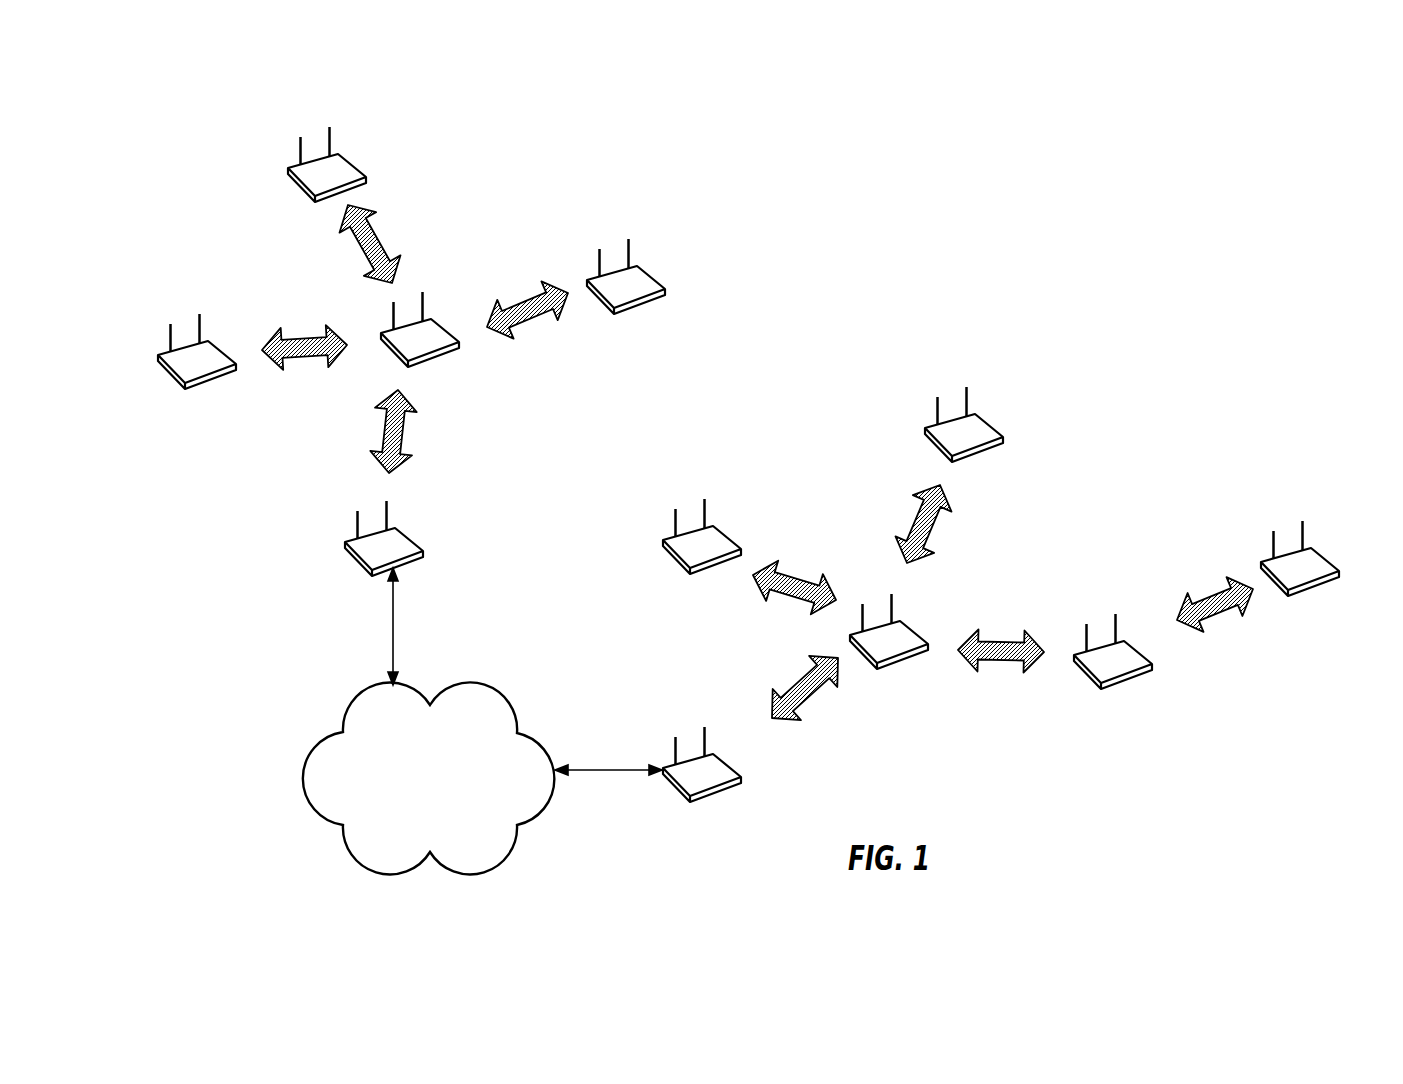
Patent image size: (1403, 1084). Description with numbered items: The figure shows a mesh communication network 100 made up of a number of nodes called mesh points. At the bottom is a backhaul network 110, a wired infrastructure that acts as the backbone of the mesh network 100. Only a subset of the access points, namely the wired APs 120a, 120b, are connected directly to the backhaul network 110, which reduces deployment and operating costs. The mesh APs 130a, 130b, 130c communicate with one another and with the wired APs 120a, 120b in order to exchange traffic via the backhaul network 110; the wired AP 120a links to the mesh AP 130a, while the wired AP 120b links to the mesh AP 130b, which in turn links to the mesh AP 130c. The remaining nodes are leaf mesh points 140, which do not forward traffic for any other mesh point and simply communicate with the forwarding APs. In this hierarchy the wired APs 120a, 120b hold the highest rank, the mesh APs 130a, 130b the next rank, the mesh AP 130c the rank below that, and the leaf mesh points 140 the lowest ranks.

The mesh communication network 100 is at (1123, 191).
The backhaul network 110 is at (470, 686).
The wired AP 120a is at (425, 521).
The wired AP 120b is at (743, 747).
The mesh AP 130a is at (461, 312).
The mesh AP 130b is at (930, 614).
The mesh AP 130c is at (1154, 634).
The leaf mesh point 140 is at (368, 147).